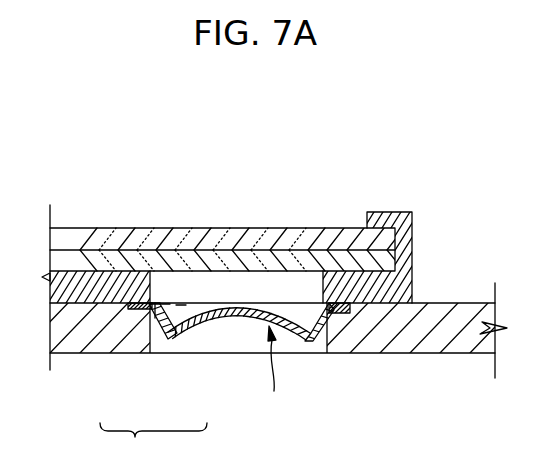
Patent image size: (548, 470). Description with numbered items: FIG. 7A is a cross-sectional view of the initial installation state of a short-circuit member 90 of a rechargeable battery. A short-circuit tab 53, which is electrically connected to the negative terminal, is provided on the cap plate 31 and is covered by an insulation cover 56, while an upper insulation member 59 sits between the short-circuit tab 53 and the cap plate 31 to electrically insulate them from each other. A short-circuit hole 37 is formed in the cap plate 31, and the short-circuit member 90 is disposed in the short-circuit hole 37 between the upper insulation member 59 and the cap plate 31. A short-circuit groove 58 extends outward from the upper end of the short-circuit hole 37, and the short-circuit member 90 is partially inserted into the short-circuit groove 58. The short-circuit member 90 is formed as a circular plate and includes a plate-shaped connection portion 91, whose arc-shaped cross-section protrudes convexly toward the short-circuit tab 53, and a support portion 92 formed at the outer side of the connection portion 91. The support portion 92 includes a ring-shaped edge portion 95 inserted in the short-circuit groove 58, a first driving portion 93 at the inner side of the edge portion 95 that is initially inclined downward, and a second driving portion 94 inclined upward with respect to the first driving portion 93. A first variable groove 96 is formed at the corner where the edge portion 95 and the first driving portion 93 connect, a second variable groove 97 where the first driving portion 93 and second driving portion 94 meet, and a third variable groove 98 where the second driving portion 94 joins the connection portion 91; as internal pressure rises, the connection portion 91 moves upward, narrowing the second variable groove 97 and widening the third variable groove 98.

The cap plate 31 is at (420, 340).
The short-circuit hole 37 is at (313, 353).
The short-circuit tab 53 is at (82, 250).
The insulation cover 56 is at (317, 238).
The short-circuit groove 58 is at (350, 315).
The upper insulation member 59 is at (403, 255).
The short-circuit member 90 is at (275, 372).
The connection portion 91 is at (230, 322).
The support portion 92 is at (153, 442).
The first driving portion 93 is at (155, 318).
The second driving portion 94 is at (178, 337).
The edge portion 95 is at (137, 322).
The first variable groove 96 is at (155, 303).
The second variable groove 97 is at (166, 305).
The third variable groove 98 is at (185, 305).